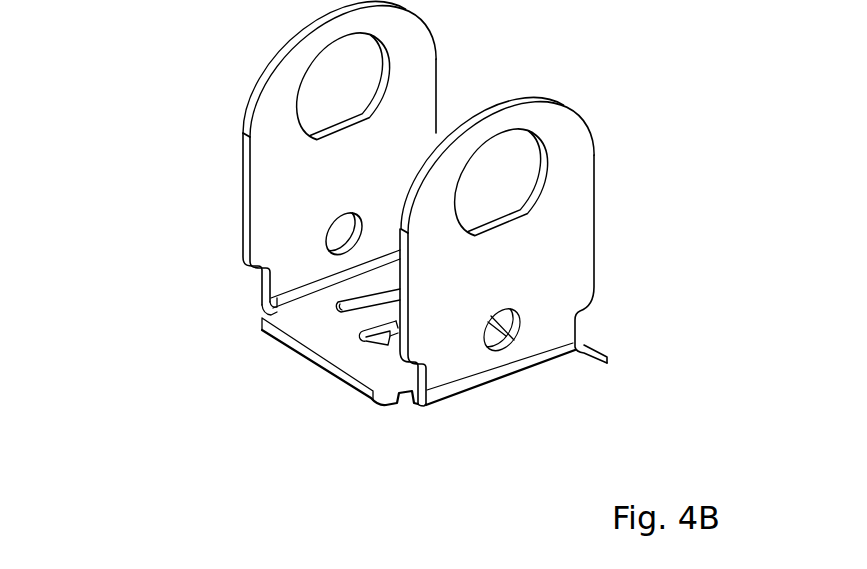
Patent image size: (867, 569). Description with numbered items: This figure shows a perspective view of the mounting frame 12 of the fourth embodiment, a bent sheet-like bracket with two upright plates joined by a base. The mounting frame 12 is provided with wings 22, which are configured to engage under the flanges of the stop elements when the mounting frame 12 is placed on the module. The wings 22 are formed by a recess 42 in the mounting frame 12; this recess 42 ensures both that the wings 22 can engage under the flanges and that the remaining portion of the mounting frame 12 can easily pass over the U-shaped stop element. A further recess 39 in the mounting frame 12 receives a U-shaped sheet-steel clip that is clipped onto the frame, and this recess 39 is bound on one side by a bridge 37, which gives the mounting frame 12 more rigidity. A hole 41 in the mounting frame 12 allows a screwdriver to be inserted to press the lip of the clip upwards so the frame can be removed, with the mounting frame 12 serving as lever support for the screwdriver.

The mounting frame 12 is at (190, 131).
The wings 22 is at (338, 347).
The bridge 37 is at (373, 315).
The recess 39 is at (388, 338).
The hole 41 is at (505, 345).
The recess 42 is at (249, 306).